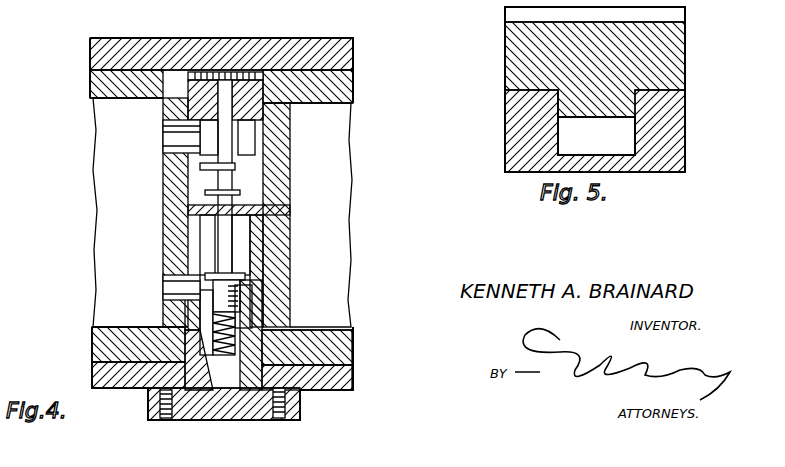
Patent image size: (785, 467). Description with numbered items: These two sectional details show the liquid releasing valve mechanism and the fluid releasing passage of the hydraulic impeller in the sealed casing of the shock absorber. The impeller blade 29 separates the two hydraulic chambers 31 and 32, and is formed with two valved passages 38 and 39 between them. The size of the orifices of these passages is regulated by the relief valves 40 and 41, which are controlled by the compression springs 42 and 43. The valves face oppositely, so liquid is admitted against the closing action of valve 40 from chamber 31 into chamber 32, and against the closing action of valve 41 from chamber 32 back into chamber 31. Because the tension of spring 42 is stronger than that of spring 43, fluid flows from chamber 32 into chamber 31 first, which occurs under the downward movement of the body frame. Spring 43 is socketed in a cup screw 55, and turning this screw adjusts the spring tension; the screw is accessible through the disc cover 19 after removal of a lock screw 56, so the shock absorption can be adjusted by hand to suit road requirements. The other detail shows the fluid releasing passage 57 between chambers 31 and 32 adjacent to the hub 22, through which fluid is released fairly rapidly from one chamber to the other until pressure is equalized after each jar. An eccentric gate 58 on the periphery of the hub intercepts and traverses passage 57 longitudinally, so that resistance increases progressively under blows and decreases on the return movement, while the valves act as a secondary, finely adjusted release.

In FIG. 4, the disc cover 19 is at (335, 400).
In FIG. 5, the hub 22 is at (512, 47).
In FIG. 5, the impeller blade 29 is at (515, 155).
In FIG. 4, the chamber 31 is at (103, 225).
In FIG. 4, the chamber 32 is at (333, 221).
In FIG. 4, the valved passage 38 is at (165, 141).
In FIG. 4, the valved passage 39 is at (165, 300).
In FIG. 4, the relief valve 40 is at (233, 170).
In FIG. 4, the relief valve 41 is at (235, 275).
In FIG. 4, the compression spring 42 is at (290, 179).
In FIG. 4, the compression spring 43 is at (237, 317).
In FIG. 4, the cup screw 55 is at (240, 378).
In FIG. 4, the lock screw 56 is at (233, 423).
In FIG. 5, the fluid releasing passage 57 is at (568, 133).
In FIG. 5, the eccentric gate 58 is at (575, 107).